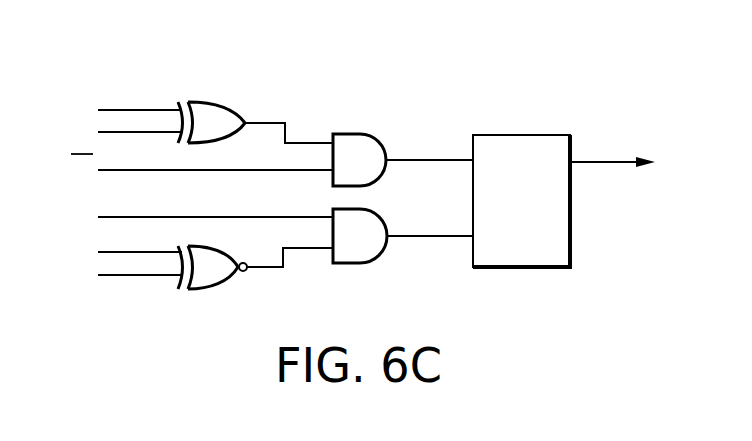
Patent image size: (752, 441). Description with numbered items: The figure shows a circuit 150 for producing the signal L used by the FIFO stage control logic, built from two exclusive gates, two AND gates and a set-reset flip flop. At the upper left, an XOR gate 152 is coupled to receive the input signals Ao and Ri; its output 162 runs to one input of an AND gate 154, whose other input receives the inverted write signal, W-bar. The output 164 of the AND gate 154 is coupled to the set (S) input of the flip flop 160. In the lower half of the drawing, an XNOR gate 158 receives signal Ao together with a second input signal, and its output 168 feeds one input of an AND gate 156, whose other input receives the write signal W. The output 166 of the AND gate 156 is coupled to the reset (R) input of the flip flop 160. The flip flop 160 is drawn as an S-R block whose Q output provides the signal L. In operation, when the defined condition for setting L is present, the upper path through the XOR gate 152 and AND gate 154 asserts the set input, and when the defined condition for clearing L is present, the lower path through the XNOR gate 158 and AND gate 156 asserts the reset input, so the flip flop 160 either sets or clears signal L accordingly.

The circuit 150 is at (390, 92).
The XOR gate 152 is at (217, 118).
The AND gate 154 is at (377, 172).
The AND gate 156 is at (377, 247).
The XNOR gate 158 is at (213, 272).
The flip flop 160 is at (522, 135).
The output of XOR gate 162 is at (266, 122).
The output of AND gate 154 164 is at (390, 155).
The output of AND gate 156 166 is at (390, 232).
The output of XNOR gate 168 is at (262, 270).